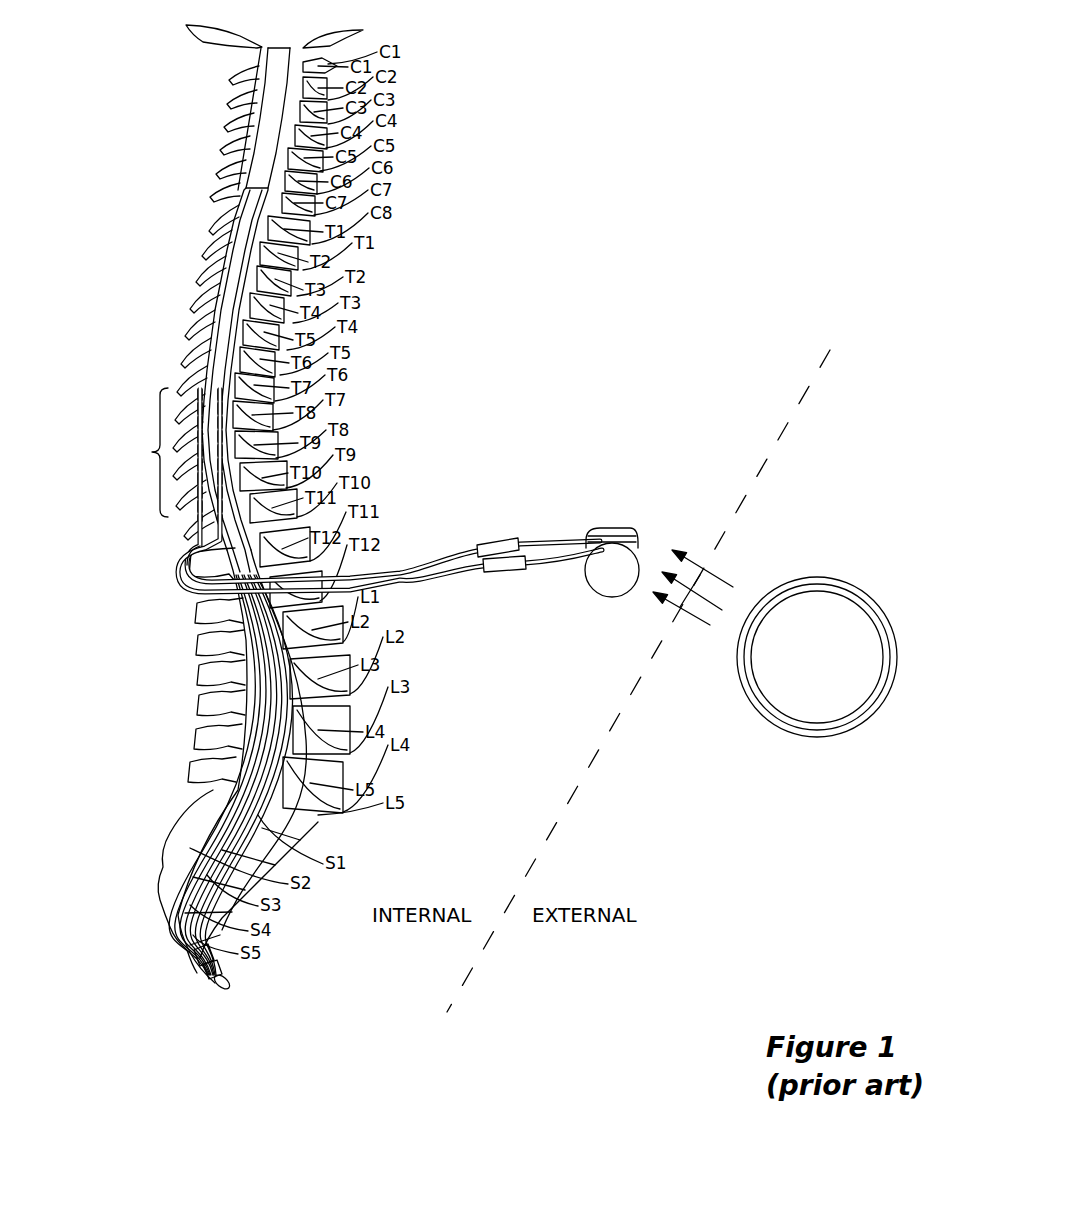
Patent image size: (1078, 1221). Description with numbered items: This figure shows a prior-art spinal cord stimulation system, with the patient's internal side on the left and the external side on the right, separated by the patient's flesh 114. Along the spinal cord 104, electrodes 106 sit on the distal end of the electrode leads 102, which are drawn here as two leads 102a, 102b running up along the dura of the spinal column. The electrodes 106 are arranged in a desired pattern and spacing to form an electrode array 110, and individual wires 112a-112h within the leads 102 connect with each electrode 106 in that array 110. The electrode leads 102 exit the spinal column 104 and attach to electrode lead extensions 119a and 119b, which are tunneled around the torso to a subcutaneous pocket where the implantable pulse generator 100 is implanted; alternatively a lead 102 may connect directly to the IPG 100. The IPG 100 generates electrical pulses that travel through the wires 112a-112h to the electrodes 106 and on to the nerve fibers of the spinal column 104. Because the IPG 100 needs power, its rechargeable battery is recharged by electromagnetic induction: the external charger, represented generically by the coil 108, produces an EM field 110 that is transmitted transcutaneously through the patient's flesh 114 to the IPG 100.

The implantable pulse generator 100 is at (590, 596).
The electrode lead 102 is at (330, 516).
The first stimulation lead 102a is at (393, 516).
The second stimulation lead 102b is at (390, 538).
The spinal cord 104 is at (246, 202).
The electrodes 106 is at (190, 539).
The coil 108 is at (756, 706).
The electrode array 110 is at (152, 452).
The individual wires 112a-112h is at (358, 524).
The patient's flesh 114 is at (805, 398).
The electrode lead extension 119a is at (550, 545).
The electrode lead extension 119b is at (550, 556).